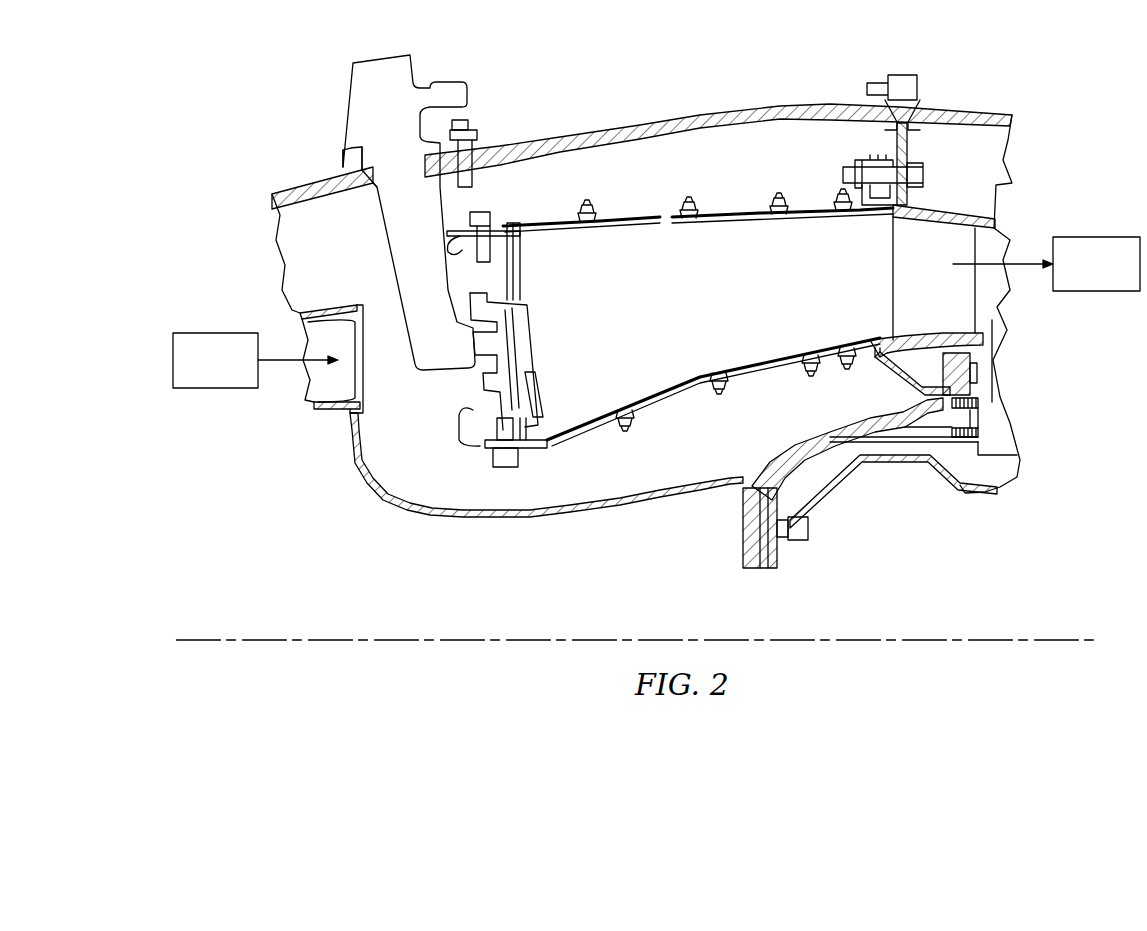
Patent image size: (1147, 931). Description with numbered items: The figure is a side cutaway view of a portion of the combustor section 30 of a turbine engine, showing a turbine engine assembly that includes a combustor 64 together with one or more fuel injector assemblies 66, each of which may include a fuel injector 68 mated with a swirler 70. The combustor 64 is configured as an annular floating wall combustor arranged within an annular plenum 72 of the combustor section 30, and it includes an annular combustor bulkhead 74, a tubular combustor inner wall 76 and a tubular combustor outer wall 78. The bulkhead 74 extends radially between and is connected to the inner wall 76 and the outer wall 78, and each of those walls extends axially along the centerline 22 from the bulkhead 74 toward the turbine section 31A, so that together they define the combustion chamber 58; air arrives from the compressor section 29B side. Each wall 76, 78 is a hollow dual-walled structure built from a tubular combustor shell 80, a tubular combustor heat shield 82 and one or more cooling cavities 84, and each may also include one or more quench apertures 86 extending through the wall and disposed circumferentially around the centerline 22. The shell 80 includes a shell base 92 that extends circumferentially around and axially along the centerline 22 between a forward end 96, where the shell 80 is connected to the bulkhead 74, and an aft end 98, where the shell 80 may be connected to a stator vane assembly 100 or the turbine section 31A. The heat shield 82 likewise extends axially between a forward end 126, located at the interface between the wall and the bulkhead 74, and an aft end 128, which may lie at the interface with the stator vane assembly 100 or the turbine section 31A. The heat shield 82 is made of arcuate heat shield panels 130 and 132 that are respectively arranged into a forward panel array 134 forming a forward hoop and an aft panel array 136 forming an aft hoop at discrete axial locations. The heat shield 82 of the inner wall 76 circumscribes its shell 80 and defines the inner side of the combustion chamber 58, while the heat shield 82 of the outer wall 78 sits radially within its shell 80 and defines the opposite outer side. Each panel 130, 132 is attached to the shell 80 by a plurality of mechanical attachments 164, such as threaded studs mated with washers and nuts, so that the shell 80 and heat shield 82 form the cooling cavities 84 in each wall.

The centerline 22 is at (982, 637).
The compressor section 29B is at (232, 369).
The combustor section 30 is at (1030, 95).
The turbine section 31A is at (1114, 272).
The combustion chamber 58 is at (741, 301).
The combustor 64 is at (655, 208).
The fuel injector assembly 66 is at (434, 384).
The fuel injector 68 is at (375, 228).
The swirler 70 is at (470, 418).
The annular plenum 72 is at (735, 158).
The combustor bulkhead 74 is at (550, 382).
The combustor inner wall 76 is at (773, 400).
The combustor outer wall 78 is at (792, 203).
The combustor shell 80 is at (568, 222).
The combustor heat shield 82 is at (636, 248).
The cooling cavity 84 is at (535, 226).
The quench aperture 86 is at (740, 220).
The shell base 92 is at (680, 222).
The forward end 96 is at (448, 238).
The aft end 98 is at (905, 207).
The stator vane assembly 100 is at (953, 288).
The forward end 126 is at (508, 242).
The aft end 128 is at (905, 223).
The heat shield panel 130 is at (592, 240).
The heat shield panel 132 is at (755, 226).
The panel array 134 is at (577, 248).
The panel array 136 is at (690, 250).
The mechanical attachment 164 is at (588, 210).